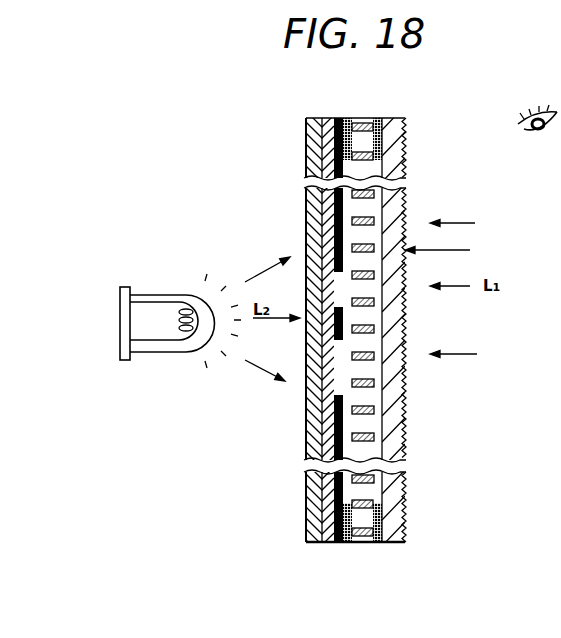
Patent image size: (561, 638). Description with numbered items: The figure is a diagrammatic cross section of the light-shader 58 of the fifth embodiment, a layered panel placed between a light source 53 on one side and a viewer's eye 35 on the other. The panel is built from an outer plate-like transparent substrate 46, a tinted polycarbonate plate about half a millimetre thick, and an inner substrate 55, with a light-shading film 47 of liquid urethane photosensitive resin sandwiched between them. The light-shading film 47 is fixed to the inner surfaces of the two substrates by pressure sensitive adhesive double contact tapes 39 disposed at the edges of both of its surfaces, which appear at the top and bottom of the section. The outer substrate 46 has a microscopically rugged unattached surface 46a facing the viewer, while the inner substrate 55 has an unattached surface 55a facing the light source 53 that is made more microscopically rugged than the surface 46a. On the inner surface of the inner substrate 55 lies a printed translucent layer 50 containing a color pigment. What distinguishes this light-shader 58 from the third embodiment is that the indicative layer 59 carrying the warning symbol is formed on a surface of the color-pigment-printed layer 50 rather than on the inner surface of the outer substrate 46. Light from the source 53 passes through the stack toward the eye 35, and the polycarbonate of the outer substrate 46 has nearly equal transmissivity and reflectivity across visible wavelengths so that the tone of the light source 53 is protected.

The observer eye 35 is at (524, 110).
The pressure sensitive adhesive double contact tapes 39 is at (344, 118).
The outer plate-like transparent substrate 46 is at (405, 430).
The unattached surface of outer substrate 46a is at (405, 383).
The light-shading film 47 is at (374, 219).
The printed translucent layer 50 is at (333, 487).
The light source 53 is at (163, 297).
The inner substrate 55 is at (330, 523).
The unattached surface of inner substrate 55a is at (307, 406).
The light-shader 58 is at (456, 251).
The indicative layer 59 is at (348, 493).